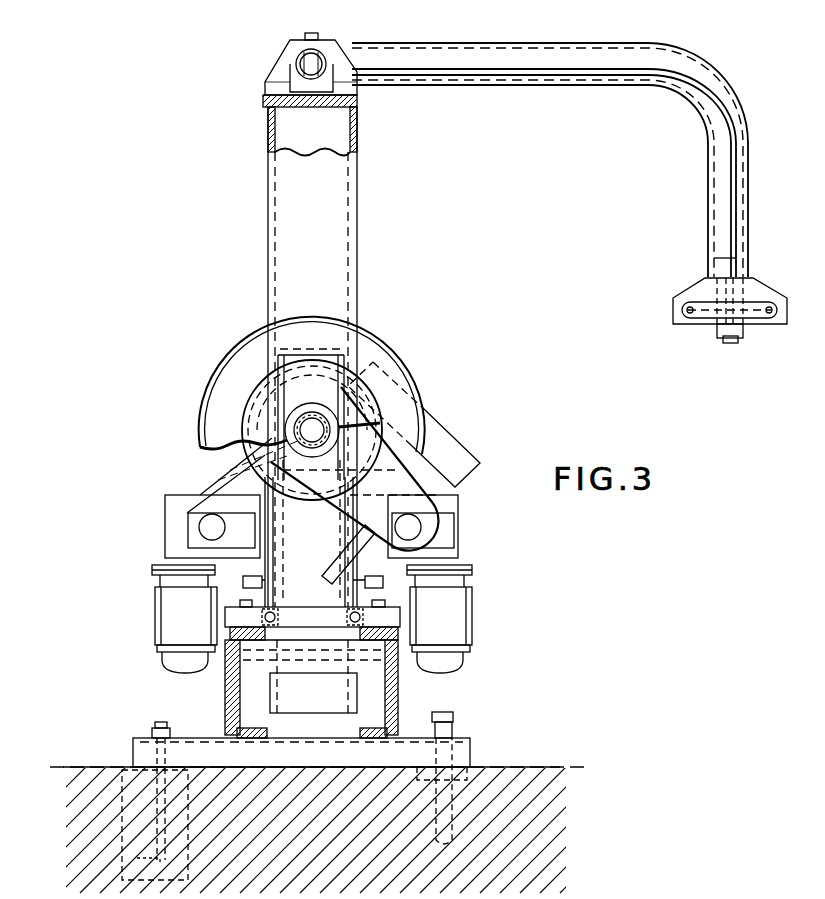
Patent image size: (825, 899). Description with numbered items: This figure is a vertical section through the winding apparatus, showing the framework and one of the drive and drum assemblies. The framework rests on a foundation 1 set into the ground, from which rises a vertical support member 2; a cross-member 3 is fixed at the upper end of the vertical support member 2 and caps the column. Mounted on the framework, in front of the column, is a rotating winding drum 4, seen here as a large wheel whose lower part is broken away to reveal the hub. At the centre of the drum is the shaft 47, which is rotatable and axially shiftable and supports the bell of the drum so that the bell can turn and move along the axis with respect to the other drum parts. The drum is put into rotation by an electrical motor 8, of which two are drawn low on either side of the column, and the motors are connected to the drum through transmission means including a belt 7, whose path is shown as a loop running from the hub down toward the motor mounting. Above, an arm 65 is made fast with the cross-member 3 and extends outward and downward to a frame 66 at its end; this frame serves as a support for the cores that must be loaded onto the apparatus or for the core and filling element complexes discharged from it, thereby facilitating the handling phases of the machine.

The foundation 1 is at (463, 738).
The vertical support member 2 is at (288, 197).
The cross-member 3 is at (296, 52).
The rotating winding drum 4 is at (246, 327).
The belt 7 is at (215, 470).
The electrical motor 8 is at (168, 612).
The shaft 47 is at (302, 421).
The arm 65 is at (706, 84).
The frame 66 is at (752, 297).